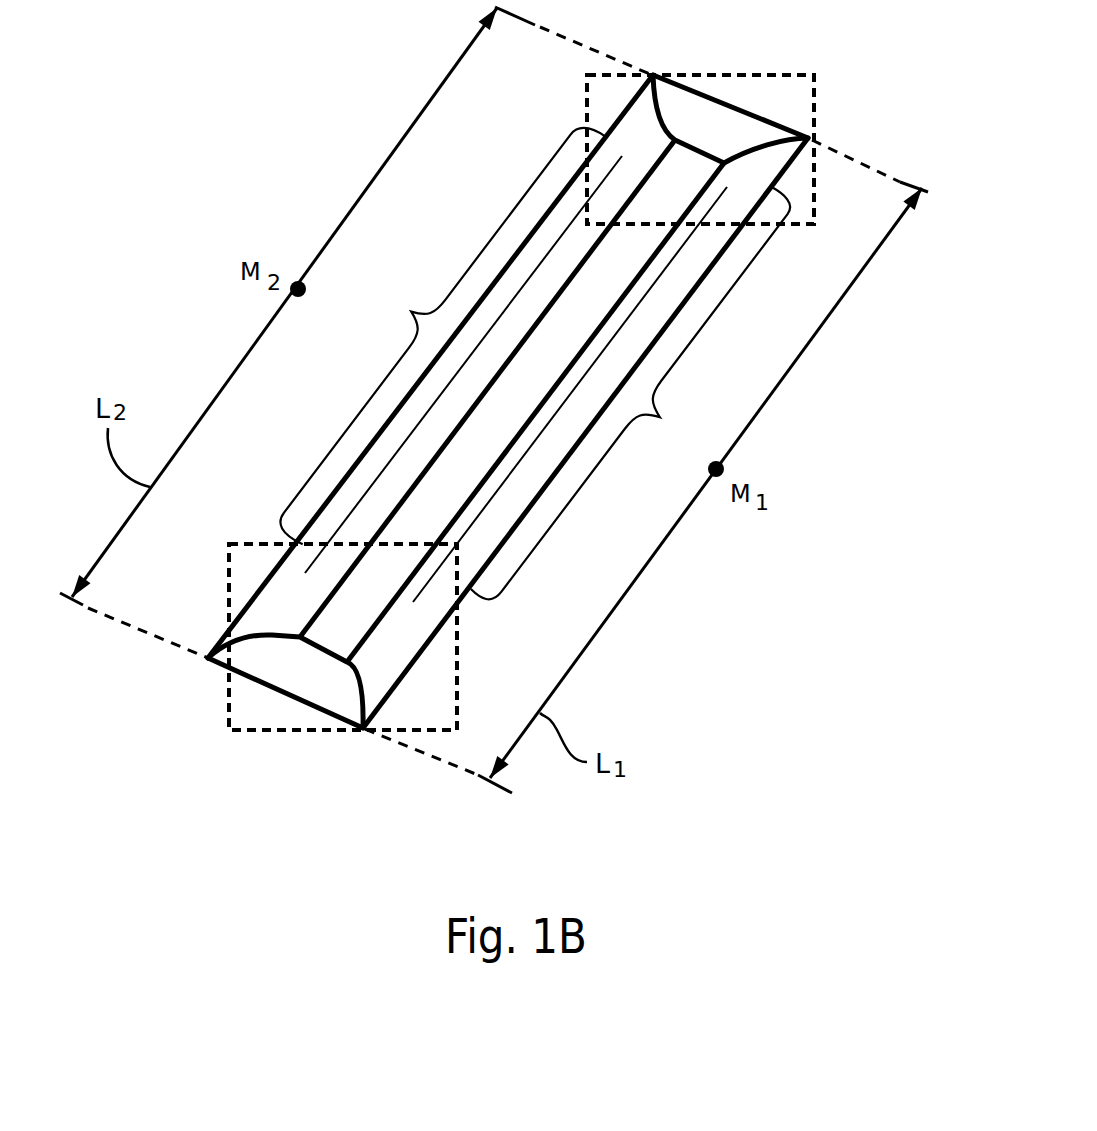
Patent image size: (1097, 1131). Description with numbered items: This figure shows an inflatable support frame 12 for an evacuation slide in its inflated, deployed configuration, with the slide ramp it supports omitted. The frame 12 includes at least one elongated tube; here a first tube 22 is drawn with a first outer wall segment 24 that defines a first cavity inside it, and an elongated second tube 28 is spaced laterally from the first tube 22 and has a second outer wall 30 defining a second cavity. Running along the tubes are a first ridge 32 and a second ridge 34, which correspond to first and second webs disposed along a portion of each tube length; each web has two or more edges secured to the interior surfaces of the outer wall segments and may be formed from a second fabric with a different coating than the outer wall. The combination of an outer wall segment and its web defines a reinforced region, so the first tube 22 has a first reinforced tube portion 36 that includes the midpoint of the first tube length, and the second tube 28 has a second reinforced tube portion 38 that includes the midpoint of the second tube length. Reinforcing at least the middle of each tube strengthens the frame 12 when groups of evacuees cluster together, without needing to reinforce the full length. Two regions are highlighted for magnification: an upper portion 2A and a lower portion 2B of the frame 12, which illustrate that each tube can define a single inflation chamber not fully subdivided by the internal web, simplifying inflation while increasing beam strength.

The inflatable support frame 12 is at (480, 233).
The first tube 22 is at (550, 383).
The first outer wall segment 24 is at (530, 478).
The second tube 28 is at (580, 277).
The second outer wall 30 is at (388, 493).
The first ridge 32 is at (625, 327).
The second ridge 34 is at (498, 318).
The first reinforced tube portion 36 is at (640, 401).
The second reinforced tube portion 38 is at (434, 326).
The upper portion of frame 2A is at (772, 74).
The lower portion of frame 2B is at (455, 645).